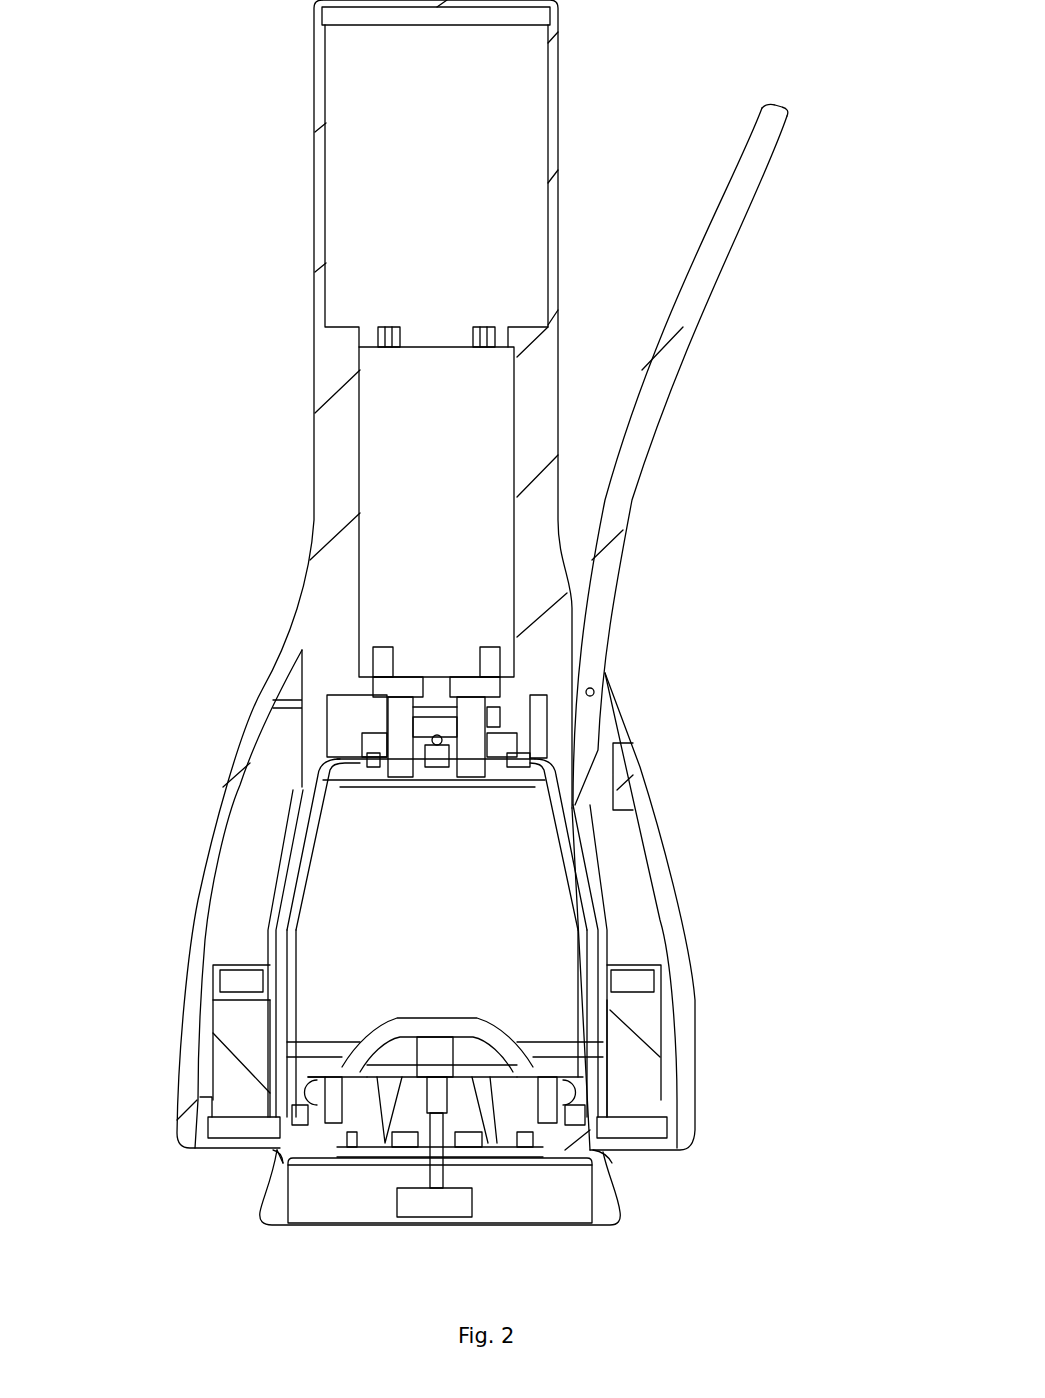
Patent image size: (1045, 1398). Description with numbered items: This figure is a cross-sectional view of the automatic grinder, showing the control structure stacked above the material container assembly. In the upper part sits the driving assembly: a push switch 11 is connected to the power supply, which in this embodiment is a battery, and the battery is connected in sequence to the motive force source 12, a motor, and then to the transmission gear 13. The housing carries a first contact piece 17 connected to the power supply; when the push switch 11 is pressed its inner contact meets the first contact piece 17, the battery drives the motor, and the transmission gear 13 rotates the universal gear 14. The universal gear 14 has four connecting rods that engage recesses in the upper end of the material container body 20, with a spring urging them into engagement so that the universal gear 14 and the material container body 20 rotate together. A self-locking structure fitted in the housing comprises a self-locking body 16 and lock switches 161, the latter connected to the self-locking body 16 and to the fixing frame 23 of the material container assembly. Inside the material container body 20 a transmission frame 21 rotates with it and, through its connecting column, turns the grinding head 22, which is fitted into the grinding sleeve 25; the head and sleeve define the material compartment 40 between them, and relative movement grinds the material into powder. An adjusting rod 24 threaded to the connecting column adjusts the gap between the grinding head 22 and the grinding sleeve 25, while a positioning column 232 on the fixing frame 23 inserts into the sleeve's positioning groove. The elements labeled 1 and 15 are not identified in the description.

The housing 1 is at (558, 118).
The push switch 11 is at (680, 322).
The motive force source 12 is at (373, 413).
The transmission gear 13 is at (400, 722).
The universal gear 14 is at (368, 745).
The contact block 15 is at (550, 745).
The self-locking body 16 is at (270, 933).
The lock switches 161 is at (243, 1020).
The first contact piece 17 is at (617, 790).
The material container body 20 is at (597, 917).
The transmission frame 21 is at (503, 1043).
The grinding head 22 is at (427, 1157).
The fixing frame 23 is at (553, 1197).
The positioning column 232 is at (280, 1147).
The adjusting rod 24 is at (443, 1203).
The grinding sleeve 25 is at (327, 1107).
The material compartment 40 is at (487, 1092).